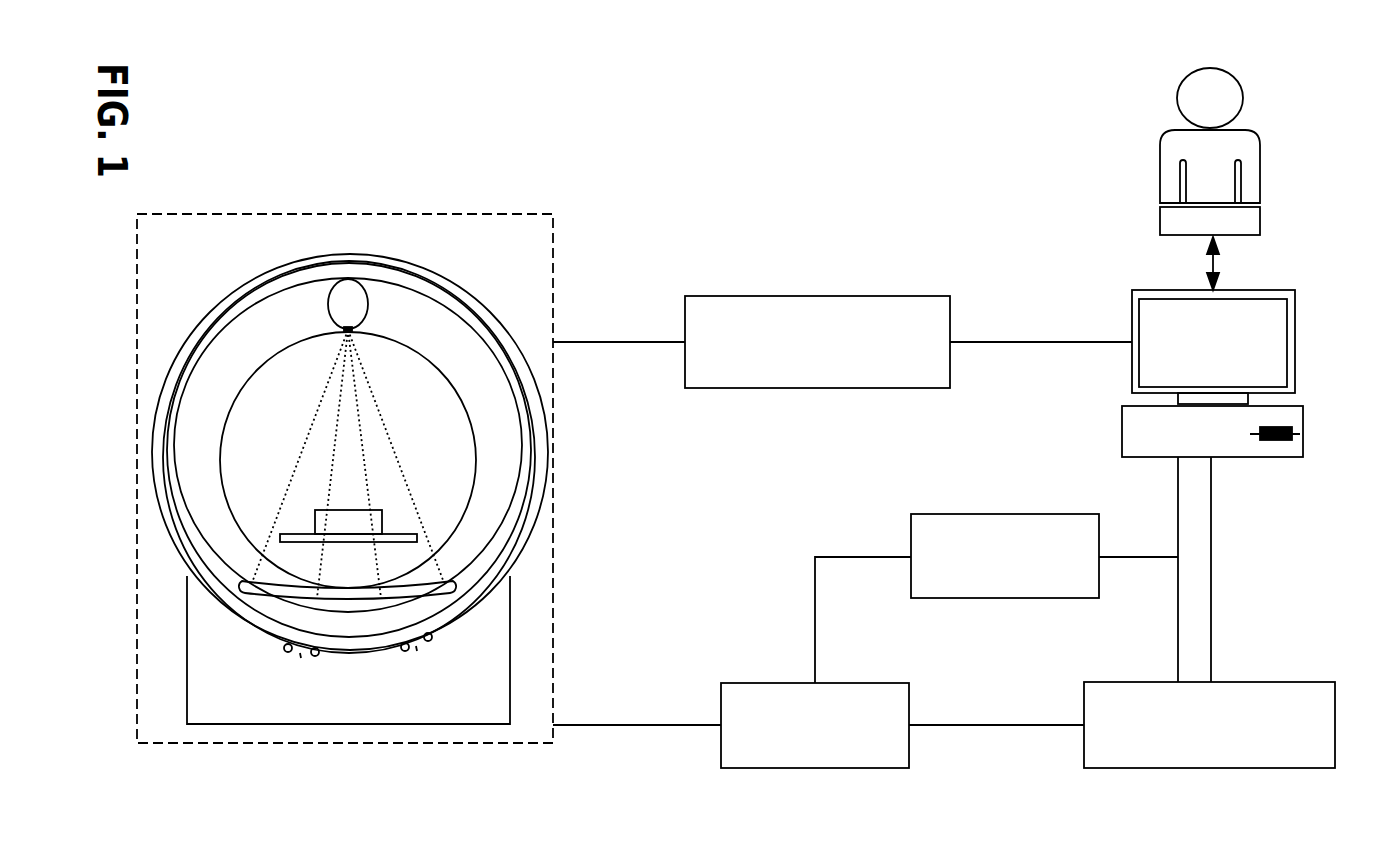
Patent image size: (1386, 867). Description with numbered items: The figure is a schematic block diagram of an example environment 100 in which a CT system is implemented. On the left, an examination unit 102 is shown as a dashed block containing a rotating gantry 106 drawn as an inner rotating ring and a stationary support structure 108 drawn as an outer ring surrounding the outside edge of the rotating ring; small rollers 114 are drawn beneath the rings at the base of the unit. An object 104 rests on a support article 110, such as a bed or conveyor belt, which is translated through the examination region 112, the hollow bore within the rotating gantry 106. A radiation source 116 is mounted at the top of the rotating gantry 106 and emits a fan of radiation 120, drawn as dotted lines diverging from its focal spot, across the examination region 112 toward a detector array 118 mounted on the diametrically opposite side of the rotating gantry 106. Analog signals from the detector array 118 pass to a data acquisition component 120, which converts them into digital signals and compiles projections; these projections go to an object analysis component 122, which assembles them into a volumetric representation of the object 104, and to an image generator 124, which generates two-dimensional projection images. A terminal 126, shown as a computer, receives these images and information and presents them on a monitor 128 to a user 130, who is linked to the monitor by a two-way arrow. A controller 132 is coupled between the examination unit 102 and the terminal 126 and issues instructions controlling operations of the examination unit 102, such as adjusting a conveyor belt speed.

The environment 100 is at (898, 60).
The examination unit 102 is at (553, 212).
The object 104 is at (382, 523).
The rotating gantry 106 is at (226, 304).
The support structure 108 is at (470, 287).
The support article 110 is at (287, 535).
The examination region 112 is at (340, 477).
The bearings / rotor 114 is at (432, 639).
The radiation source 116 is at (360, 290).
The detector array 118 is at (268, 602).
The data acquisition component 120 is at (313, 420).
The object analysis component 122 is at (1005, 513).
The image generator 124 is at (1313, 682).
The terminal 126 is at (1303, 406).
The monitor 128 is at (1293, 290).
The user 130 is at (1260, 147).
The controller 132 is at (818, 295).